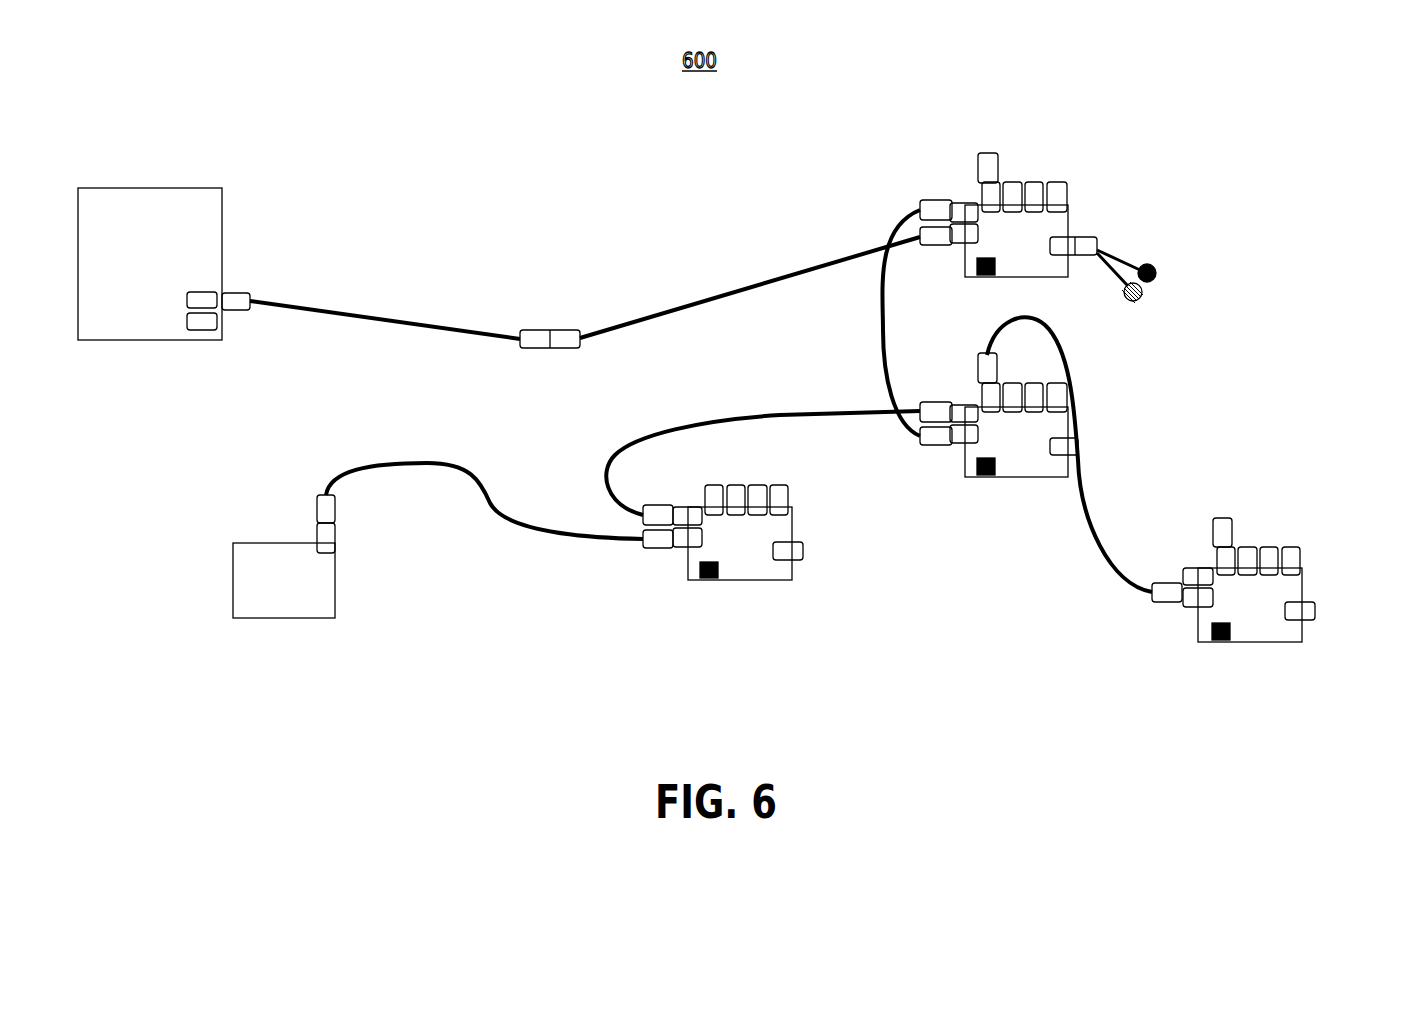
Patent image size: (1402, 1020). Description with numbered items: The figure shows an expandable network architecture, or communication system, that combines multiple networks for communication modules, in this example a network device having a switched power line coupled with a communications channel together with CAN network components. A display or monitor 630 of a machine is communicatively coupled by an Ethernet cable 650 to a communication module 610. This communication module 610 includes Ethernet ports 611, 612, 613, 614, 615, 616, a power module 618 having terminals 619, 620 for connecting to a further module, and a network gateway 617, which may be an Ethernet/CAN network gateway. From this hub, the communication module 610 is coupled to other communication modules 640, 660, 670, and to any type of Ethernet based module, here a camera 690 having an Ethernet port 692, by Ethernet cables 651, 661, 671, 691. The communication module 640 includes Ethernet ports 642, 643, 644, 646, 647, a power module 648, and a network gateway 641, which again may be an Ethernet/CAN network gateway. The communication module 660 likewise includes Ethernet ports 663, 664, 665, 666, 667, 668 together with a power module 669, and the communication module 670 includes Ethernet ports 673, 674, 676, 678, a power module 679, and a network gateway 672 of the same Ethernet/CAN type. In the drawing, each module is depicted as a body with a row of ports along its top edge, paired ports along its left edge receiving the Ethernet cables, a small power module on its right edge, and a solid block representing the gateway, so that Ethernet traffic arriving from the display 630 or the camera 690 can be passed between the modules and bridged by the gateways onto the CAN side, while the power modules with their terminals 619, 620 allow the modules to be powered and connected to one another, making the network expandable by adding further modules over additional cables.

The communication module 610 is at (1068, 217).
The Ethernet port 611 is at (960, 243).
The Ethernet port 612 is at (958, 210).
The Ethernet port 613 is at (983, 190).
The Ethernet port 614 is at (1013, 185).
The Ethernet port 615 is at (1035, 185).
The Ethernet port 616 is at (1058, 187).
The network gateway 617 is at (987, 277).
The power module 618 is at (1067, 242).
The terminal 619 is at (1157, 278).
The terminal 620 is at (1138, 300).
The display or monitor 630 is at (223, 233).
The communication module 640 is at (1070, 420).
The network gateway 641 is at (987, 477).
The Ethernet port 642 is at (960, 443).
The Ethernet port 643 is at (963, 407).
The Ethernet port 644 is at (980, 390).
The Ethernet port 646 is at (1037, 383).
The Ethernet port 647 is at (1058, 390).
The power module 648 is at (1077, 427).
The Ethernet cable 650 is at (682, 303).
The Ethernet cable 651 is at (882, 323).
The communication module 660 is at (767, 582).
The Ethernet cable 661 is at (678, 423).
The Ethernet port 663 is at (683, 545).
The Ethernet port 664 is at (678, 515).
The Ethernet port 665 is at (715, 493).
The Ethernet port 666 is at (737, 493).
The Ethernet port 667 is at (758, 493).
The Ethernet port 668 is at (782, 493).
The power module 669 is at (793, 547).
The communication module 670 is at (1277, 643).
The Ethernet cable 671 is at (1088, 518).
The network gateway 672 is at (1223, 645).
The Ethernet port 673 is at (1190, 607).
The Ethernet port 674 is at (1217, 532).
The Ethernet port 676 is at (1268, 548).
The Ethernet port 678 is at (1290, 552).
The power module 679 is at (1307, 603).
The camera 690 is at (282, 620).
The Ethernet cable 691 is at (430, 463).
The Ethernet port 692 is at (330, 535).